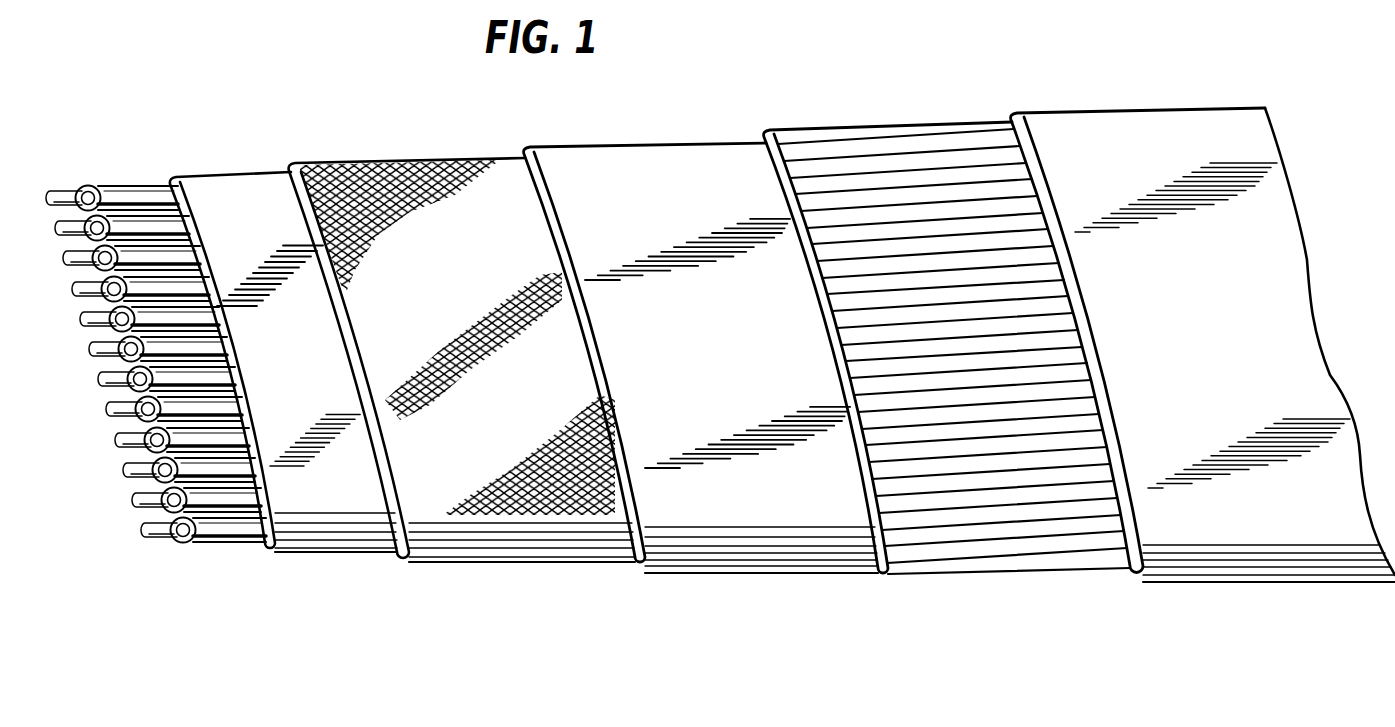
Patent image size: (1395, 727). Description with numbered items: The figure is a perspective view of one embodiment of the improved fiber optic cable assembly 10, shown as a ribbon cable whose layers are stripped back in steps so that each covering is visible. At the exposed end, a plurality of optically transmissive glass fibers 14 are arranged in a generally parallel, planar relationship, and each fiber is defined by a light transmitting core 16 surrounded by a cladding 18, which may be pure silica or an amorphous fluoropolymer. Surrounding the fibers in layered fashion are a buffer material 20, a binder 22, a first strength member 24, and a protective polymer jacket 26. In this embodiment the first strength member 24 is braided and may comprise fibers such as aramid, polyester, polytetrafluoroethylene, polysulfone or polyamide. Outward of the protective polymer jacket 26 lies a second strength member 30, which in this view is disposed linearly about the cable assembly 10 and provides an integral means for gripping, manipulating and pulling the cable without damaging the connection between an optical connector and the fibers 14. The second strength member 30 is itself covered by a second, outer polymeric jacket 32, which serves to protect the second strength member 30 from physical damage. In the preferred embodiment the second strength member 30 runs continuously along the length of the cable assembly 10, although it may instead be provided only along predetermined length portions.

The fiber optic cable assembly 10 is at (702, 90).
The optically transmissive glass fiber 14 is at (171, 423).
The core 16 is at (146, 531).
The cladding 18 is at (240, 548).
The buffer material 20 is at (168, 178).
The binder 22 is at (355, 550).
The strength member 24 is at (548, 560).
The protective polymer jacket 26 is at (790, 574).
The second strength member 30 is at (1040, 578).
The outer polymeric jacket 32 is at (1310, 584).